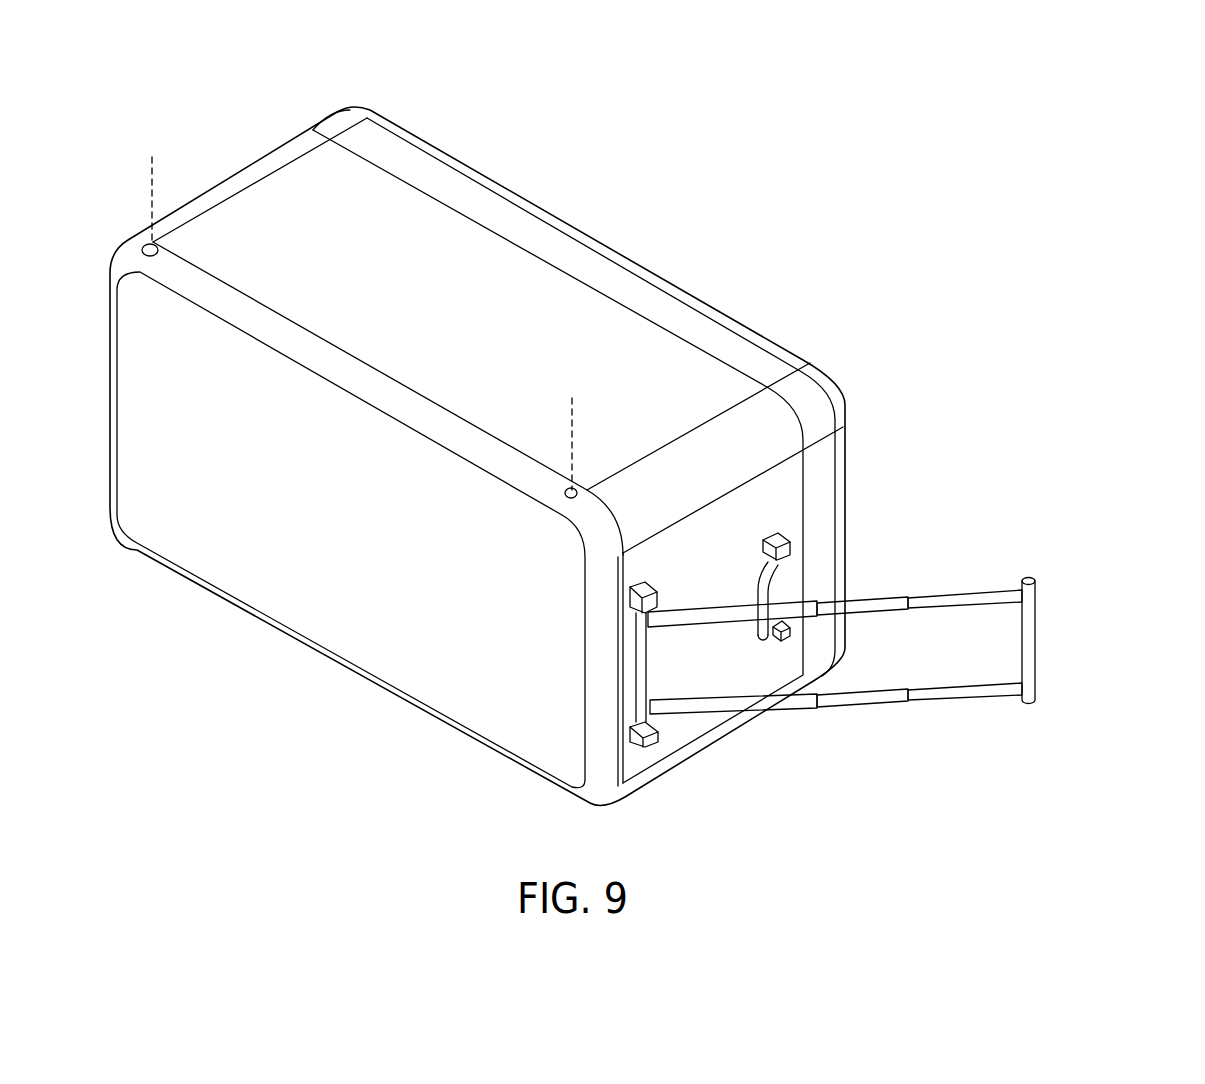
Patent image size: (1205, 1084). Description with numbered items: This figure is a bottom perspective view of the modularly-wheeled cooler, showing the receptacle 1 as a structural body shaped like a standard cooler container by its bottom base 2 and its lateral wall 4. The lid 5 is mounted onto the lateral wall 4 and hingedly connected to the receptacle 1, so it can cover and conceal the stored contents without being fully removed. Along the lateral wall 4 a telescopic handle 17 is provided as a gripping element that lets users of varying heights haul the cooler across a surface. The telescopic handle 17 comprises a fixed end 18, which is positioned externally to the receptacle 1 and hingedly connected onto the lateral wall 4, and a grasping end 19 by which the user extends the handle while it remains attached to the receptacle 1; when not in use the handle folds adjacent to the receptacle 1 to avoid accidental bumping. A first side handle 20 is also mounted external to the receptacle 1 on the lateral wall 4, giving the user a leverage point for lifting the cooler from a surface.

The receptacle 1 is at (896, 320).
The bottom base 2 is at (125, 311).
The lateral wall 4 is at (303, 168).
The lid 5 is at (557, 230).
The telescopic handle 17 is at (900, 517).
The fixed end 18 is at (650, 605).
The grasping end 19 is at (1028, 641).
The first side handle 20 is at (772, 541).